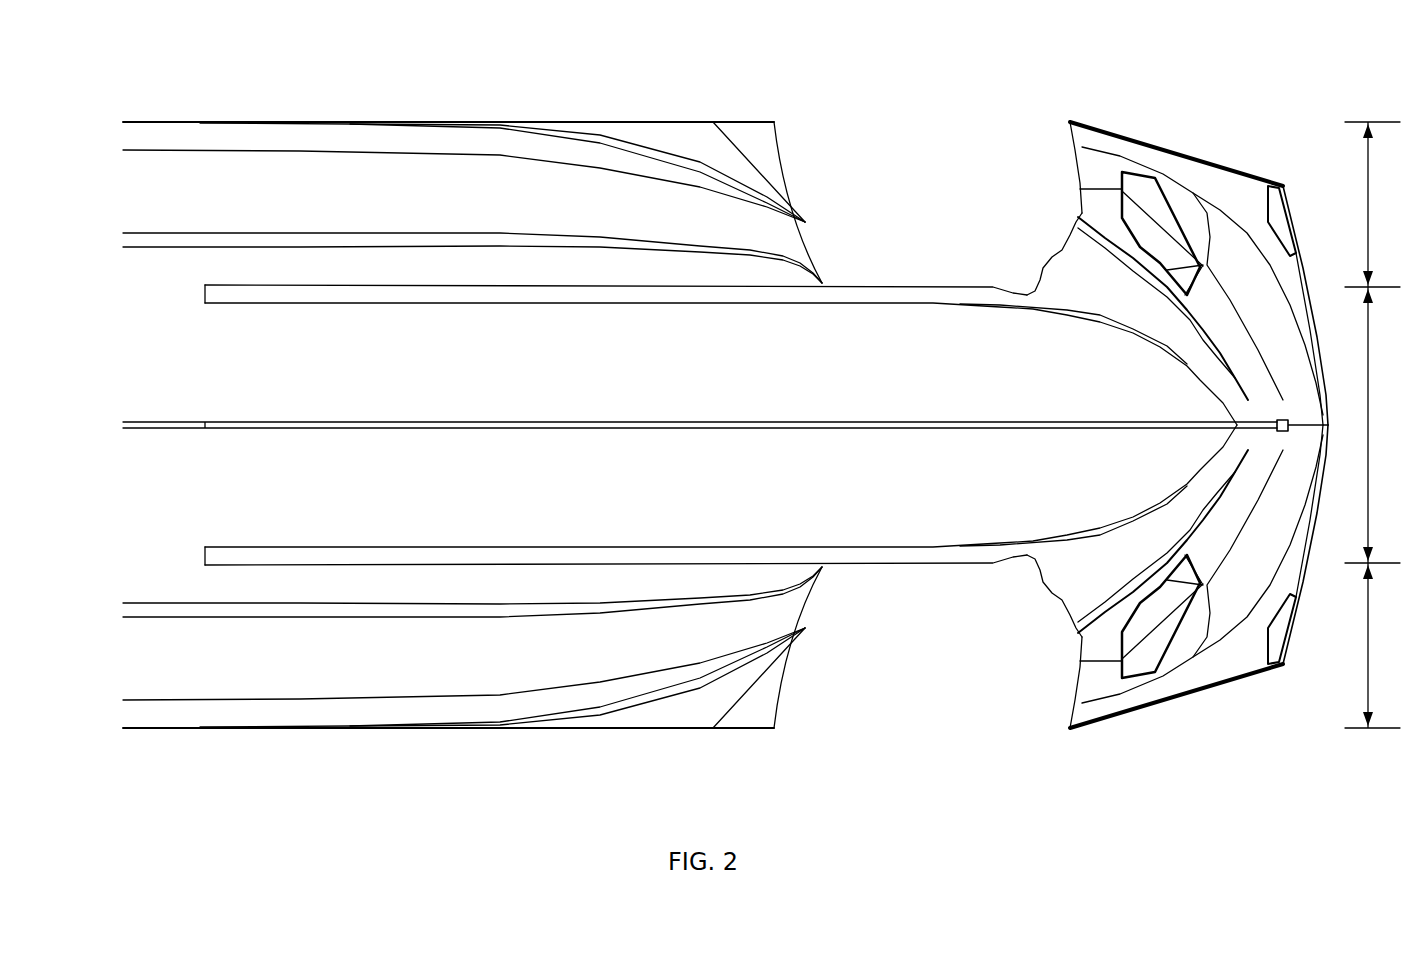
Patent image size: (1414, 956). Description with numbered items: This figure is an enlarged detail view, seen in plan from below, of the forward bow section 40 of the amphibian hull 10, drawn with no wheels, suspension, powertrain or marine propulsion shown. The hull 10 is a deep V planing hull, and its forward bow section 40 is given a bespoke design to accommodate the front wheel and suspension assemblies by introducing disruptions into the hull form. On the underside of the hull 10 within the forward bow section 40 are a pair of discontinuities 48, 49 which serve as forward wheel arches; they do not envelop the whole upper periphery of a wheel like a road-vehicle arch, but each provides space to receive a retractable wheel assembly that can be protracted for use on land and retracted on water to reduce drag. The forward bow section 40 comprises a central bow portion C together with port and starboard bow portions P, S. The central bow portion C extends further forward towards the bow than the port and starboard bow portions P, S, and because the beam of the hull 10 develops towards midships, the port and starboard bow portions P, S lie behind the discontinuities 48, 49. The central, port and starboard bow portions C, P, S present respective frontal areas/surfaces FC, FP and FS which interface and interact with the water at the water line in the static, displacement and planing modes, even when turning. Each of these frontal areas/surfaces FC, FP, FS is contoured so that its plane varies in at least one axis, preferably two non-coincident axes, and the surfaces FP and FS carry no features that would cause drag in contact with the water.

The forward bow section 40 is at (667, 87).
The amphibian hull 10 is at (345, 390).
The discontinuity 48 is at (942, 200).
The discontinuity 49 is at (942, 668).
The starboard bow portion S is at (783, 244).
The port bow portion P is at (773, 630).
The central bow portion C is at (1136, 390).
The frontal area/surface of the starboard bow portion FS is at (730, 225).
The frontal area/surface of the port bow portion FP is at (712, 652).
The frontal area/surface of the central bow portion FC is at (1192, 410).